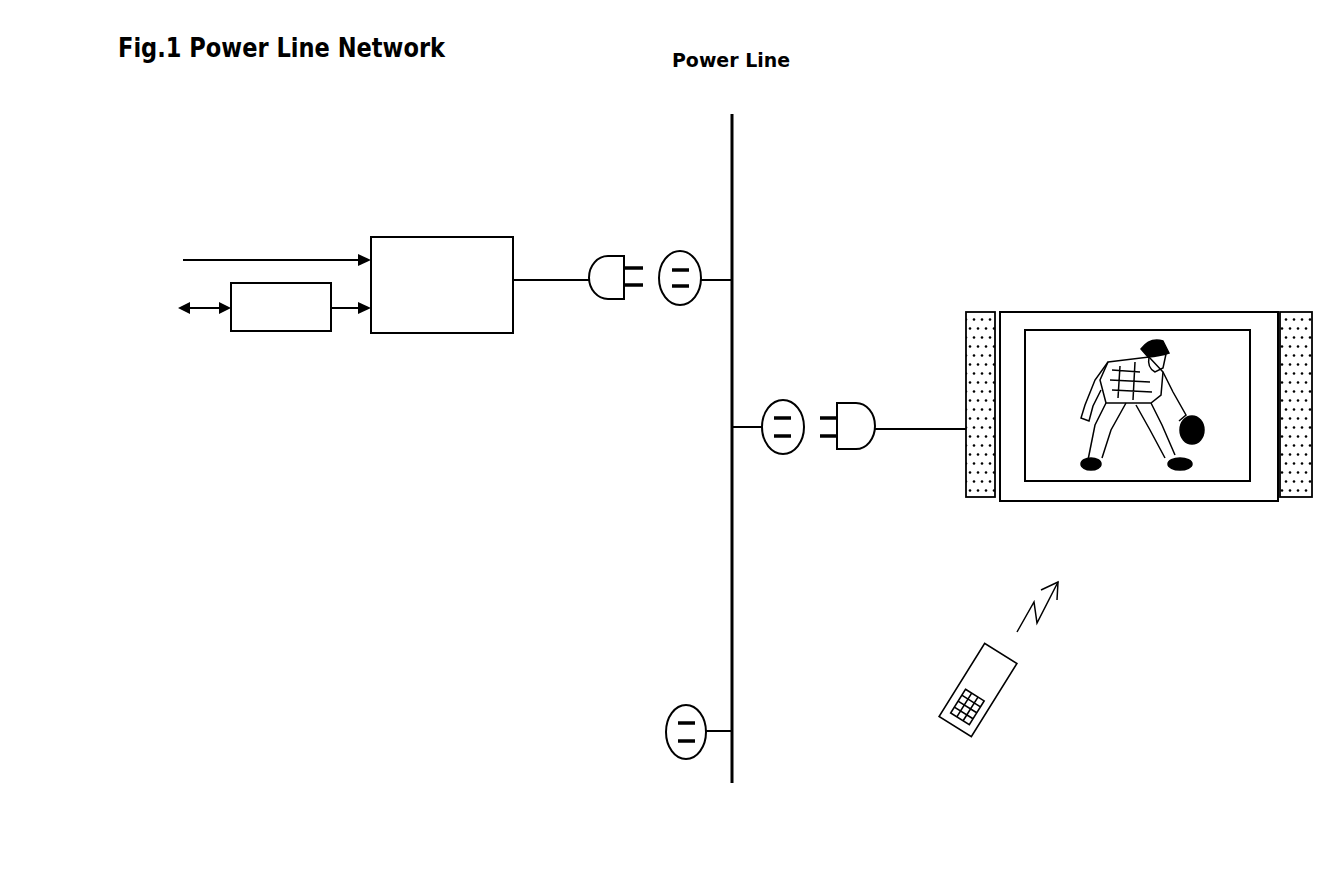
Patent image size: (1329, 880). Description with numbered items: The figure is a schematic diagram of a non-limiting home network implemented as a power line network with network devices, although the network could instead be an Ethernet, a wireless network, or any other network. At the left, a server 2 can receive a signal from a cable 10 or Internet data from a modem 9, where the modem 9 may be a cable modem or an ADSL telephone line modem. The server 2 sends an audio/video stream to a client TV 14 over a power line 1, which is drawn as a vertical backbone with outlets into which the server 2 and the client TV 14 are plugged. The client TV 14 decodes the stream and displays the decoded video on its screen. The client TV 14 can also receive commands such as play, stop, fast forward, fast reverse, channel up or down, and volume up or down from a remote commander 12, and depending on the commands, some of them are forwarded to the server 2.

The power line 1 is at (730, 158).
The server 2 is at (483, 237).
The modem 9 is at (271, 331).
The cable 10 is at (235, 260).
The remote commander 12 is at (952, 696).
The client TV 14 is at (1237, 312).